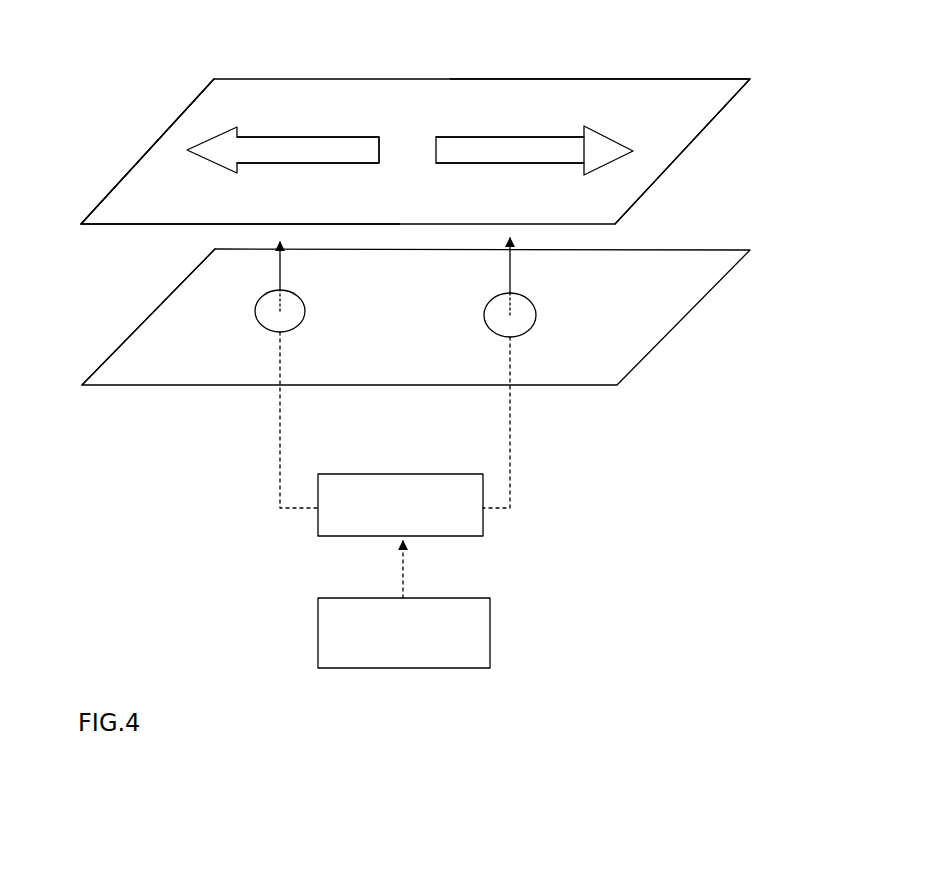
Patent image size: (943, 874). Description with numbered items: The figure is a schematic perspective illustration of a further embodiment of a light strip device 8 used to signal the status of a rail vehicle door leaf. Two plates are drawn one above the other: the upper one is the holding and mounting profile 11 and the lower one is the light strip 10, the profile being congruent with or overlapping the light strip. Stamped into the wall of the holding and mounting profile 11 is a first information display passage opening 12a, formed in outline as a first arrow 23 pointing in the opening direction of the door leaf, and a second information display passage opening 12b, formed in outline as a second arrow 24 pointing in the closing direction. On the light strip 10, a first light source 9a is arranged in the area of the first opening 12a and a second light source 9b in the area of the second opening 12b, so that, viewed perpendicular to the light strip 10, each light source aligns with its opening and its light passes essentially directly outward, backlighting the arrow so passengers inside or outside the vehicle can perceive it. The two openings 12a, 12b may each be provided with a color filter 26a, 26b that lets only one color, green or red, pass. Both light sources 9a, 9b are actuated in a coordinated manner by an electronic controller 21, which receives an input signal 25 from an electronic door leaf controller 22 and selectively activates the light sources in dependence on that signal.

The light strip device 8 is at (185, 76).
The first light source 9a is at (525, 320).
The second light source 9b is at (268, 315).
The light strip 10 is at (698, 290).
The holding and mounting profile 11 is at (697, 83).
The first information display passage opening 12a is at (535, 155).
The second information display passage opening 12b is at (282, 153).
The electronic controller 21 is at (420, 517).
The electronic door leaf controller 22 is at (425, 645).
The first arrow 23 is at (556, 150).
The second arrow 24 is at (272, 145).
The input signal 25 is at (405, 570).
The color filter 26a is at (495, 147).
The color filter 26b is at (322, 147).